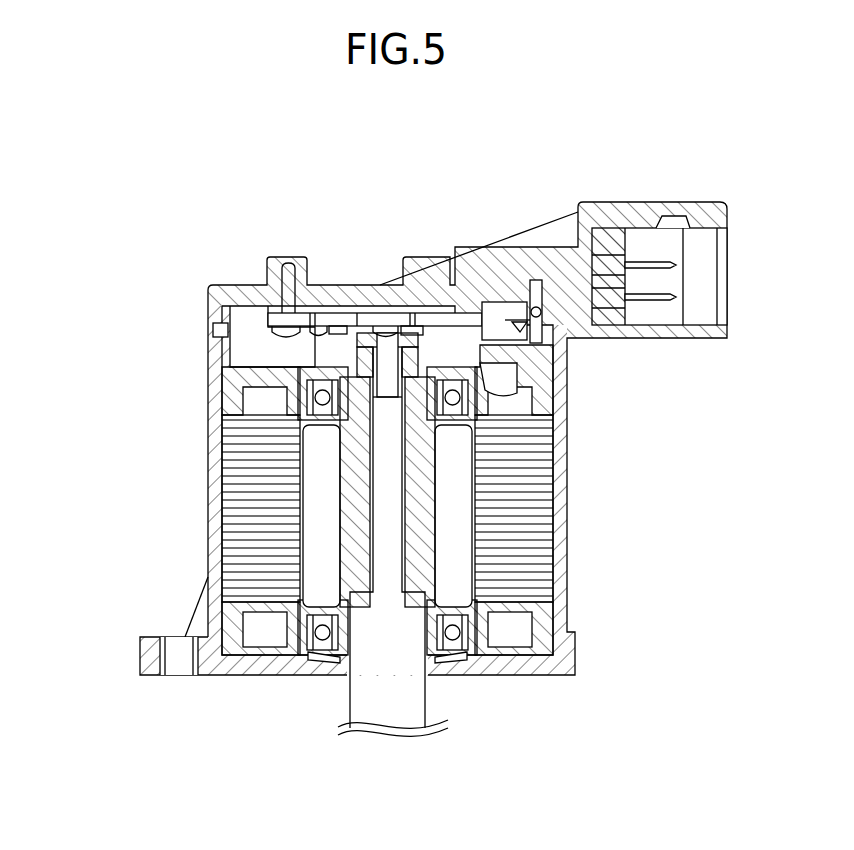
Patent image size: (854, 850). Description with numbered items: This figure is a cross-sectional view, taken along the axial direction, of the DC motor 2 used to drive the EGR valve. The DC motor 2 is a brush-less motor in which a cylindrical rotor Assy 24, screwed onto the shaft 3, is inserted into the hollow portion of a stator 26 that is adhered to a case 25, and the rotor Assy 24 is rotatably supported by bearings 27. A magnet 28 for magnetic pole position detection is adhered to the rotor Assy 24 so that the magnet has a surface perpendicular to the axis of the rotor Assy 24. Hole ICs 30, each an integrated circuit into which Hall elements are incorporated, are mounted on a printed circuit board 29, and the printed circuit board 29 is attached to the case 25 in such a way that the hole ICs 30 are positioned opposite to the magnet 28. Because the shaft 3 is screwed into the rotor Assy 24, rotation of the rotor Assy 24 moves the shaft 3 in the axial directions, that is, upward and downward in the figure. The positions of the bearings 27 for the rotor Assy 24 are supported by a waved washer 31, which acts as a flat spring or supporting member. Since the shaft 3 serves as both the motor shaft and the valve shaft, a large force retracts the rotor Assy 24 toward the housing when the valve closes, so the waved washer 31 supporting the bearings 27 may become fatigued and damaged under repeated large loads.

The DC motor 2 is at (142, 567).
The shaft 3 is at (400, 703).
The rotor Assy 24 is at (318, 465).
The case 25 is at (567, 424).
The stator 26 is at (237, 515).
The bearings 27 is at (450, 622).
The magnet for magnetic pole position detection 28 is at (327, 348).
The printed circuit board 29 is at (333, 313).
The hole ICs 30 is at (432, 336).
The waved washer 31 is at (313, 662).